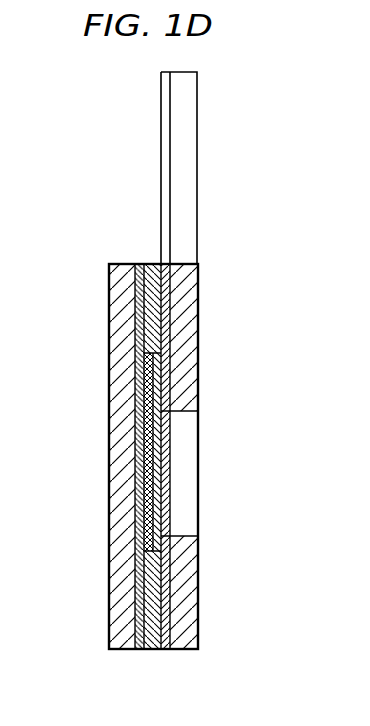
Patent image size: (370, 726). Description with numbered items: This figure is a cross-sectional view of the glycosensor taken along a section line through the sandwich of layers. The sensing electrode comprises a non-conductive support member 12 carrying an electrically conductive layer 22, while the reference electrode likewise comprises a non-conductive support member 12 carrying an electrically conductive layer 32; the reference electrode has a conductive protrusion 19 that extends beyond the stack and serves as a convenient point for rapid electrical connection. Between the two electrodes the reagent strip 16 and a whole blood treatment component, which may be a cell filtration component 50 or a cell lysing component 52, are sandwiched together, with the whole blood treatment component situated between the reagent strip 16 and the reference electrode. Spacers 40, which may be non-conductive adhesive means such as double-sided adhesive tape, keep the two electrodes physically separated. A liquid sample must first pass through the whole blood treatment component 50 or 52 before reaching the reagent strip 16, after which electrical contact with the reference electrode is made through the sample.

The non-conductive support member 12 is at (197, 92).
The electrically conductive layer 32 is at (161, 88).
The spacers 40 is at (136, 294).
The reagent strip 16 is at (136, 453).
The electrically conductive layer 22 is at (140, 650).
The cell filtration component 50 is at (213, 473).
The cell lysing component 52 is at (166, 422).
The conductive protrusion 19 is at (212, 192).